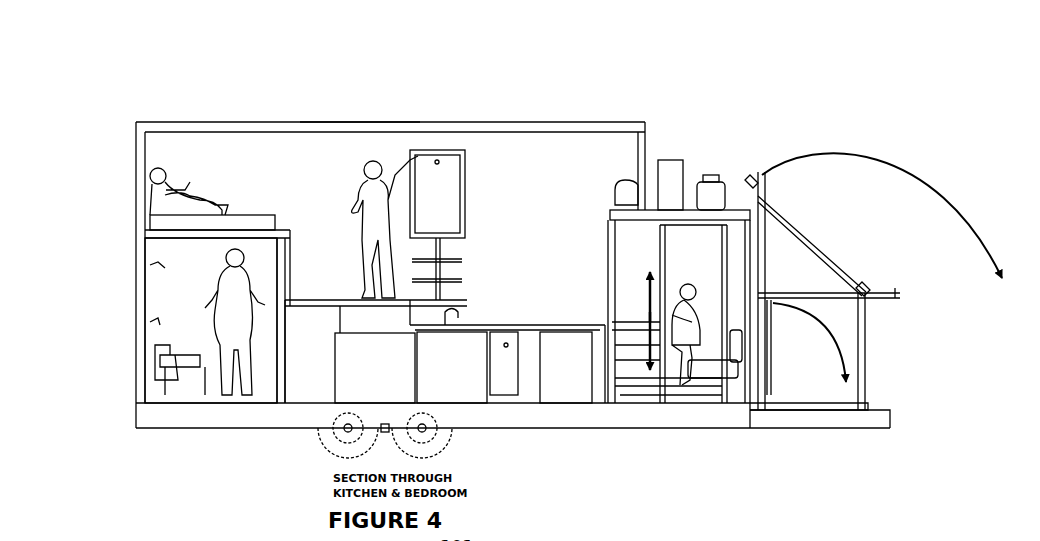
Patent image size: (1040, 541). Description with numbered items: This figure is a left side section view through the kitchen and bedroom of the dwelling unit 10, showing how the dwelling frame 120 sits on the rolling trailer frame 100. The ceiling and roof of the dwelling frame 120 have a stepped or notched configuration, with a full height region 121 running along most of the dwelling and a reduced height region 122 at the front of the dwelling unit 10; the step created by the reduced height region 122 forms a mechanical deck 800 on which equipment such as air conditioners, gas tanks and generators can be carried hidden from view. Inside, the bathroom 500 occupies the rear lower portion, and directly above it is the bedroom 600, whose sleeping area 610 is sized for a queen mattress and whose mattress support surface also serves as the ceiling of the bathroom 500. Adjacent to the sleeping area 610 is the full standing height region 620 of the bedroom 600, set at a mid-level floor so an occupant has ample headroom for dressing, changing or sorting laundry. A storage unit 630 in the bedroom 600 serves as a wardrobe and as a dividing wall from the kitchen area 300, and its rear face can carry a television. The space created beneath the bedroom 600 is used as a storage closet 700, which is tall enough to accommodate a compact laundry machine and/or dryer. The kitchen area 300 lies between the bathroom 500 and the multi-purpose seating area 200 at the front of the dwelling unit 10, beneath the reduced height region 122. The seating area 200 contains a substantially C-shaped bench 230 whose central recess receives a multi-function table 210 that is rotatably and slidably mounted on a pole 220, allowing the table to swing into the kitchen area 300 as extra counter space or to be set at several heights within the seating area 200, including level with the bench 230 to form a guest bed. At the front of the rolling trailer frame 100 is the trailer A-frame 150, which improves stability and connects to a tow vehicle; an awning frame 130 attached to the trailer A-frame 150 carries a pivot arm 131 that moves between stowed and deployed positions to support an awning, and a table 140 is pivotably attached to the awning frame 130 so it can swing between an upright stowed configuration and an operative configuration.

The dwelling unit 10 is at (890, 140).
The rolling trailer frame 100 is at (540, 420).
The dwelling frame 120 is at (420, 121).
The full height region 121 is at (458, 101).
The reduced height region 122 is at (703, 130).
The awning frame 130 is at (835, 224).
The pivot arm 131 is at (832, 255).
The table 140 is at (773, 356).
The trailer A-frame 150 is at (866, 422).
The multi-purpose seating area 200 is at (690, 268).
The multi-function table 210 is at (625, 325).
The pole 220 is at (622, 300).
The bench 230 is at (718, 372).
The kitchen area 300 is at (571, 162).
The bathroom 500 is at (205, 350).
The bedroom 600 is at (290, 163).
The sleeping area 610 is at (224, 163).
The full standing height region 620 is at (322, 236).
The storage unit 630 is at (455, 200).
The storage closet 700 is at (310, 360).
The mechanical deck 800 is at (728, 206).